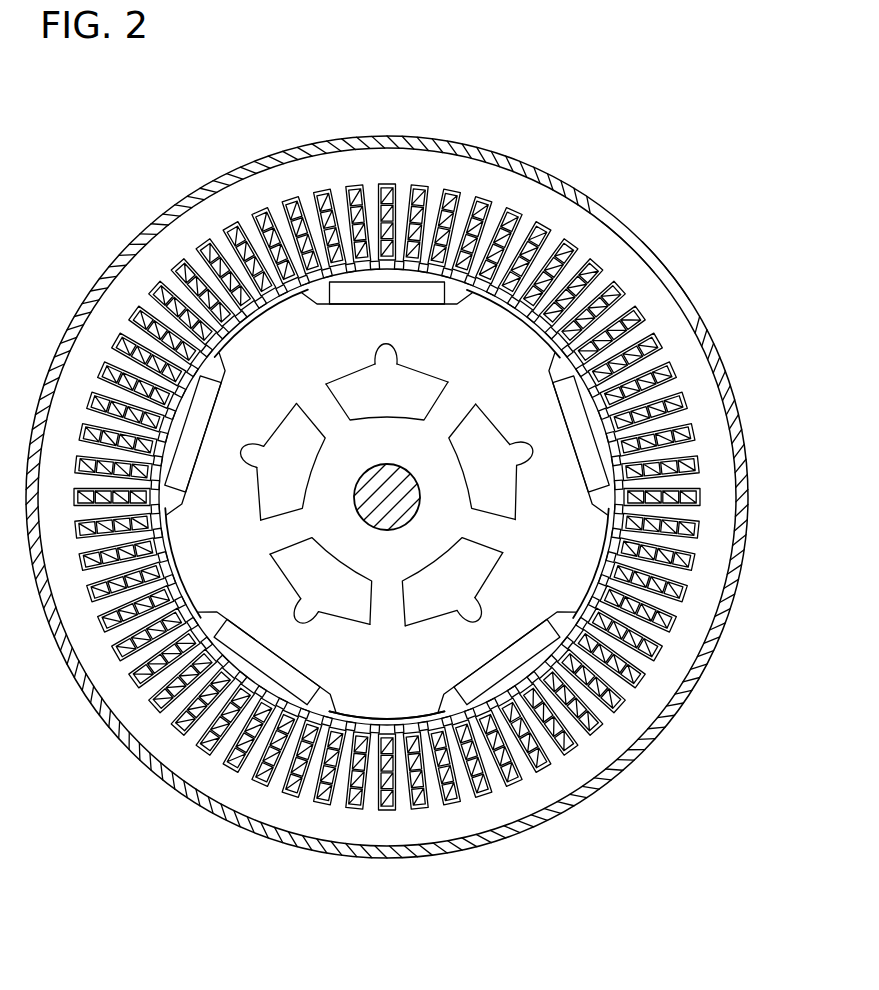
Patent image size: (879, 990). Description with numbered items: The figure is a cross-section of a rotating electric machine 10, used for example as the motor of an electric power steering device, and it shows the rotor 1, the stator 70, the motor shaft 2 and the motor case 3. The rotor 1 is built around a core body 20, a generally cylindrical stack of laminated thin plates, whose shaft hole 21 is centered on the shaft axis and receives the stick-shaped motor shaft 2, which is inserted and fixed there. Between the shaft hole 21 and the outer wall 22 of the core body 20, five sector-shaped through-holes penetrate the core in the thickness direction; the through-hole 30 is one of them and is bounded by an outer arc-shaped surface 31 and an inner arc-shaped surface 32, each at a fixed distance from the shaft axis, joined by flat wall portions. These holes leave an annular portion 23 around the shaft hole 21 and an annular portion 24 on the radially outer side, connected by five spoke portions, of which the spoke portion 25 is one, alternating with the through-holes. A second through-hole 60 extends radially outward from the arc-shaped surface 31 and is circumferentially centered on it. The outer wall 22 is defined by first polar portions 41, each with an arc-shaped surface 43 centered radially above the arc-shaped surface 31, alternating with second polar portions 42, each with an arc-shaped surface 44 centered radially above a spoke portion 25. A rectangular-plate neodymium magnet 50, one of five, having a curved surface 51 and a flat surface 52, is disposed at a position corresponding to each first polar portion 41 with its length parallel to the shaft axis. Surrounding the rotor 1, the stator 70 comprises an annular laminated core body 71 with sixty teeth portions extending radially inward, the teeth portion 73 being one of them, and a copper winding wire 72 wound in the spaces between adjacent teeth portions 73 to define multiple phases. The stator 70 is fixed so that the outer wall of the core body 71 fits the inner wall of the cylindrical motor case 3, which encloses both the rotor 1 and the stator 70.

The rotor 1 is at (460, 279).
The motor shaft 2 is at (420, 492).
The motor case 3 is at (752, 441).
The rotating electric machine 10 is at (466, 109).
The core body 20 is at (352, 708).
The shaft hole 21 is at (393, 465).
The outer wall 22 is at (428, 737).
The annular portion 23 is at (338, 548).
The annular portion 24 is at (223, 607).
The spoke portion 25 is at (330, 413).
The through-hole 30 is at (424, 380).
The arc-shaped surface 31 is at (333, 395).
The arc-shaped surface 32 is at (378, 415).
The first polar portion 41 is at (379, 196).
The second polar portion 42 is at (222, 270).
The arc-shaped surface 43 is at (395, 196).
The arc-shaped surface 44 is at (242, 252).
The magnet 50 is at (349, 192).
The curved surface 51 is at (420, 196).
The flat surface 52 is at (414, 306).
The through-hole 60 is at (376, 353).
The stator 70 is at (624, 226).
The core body 71 is at (636, 268).
The winding wire 72 is at (641, 313).
The teeth portion 73 is at (667, 321).